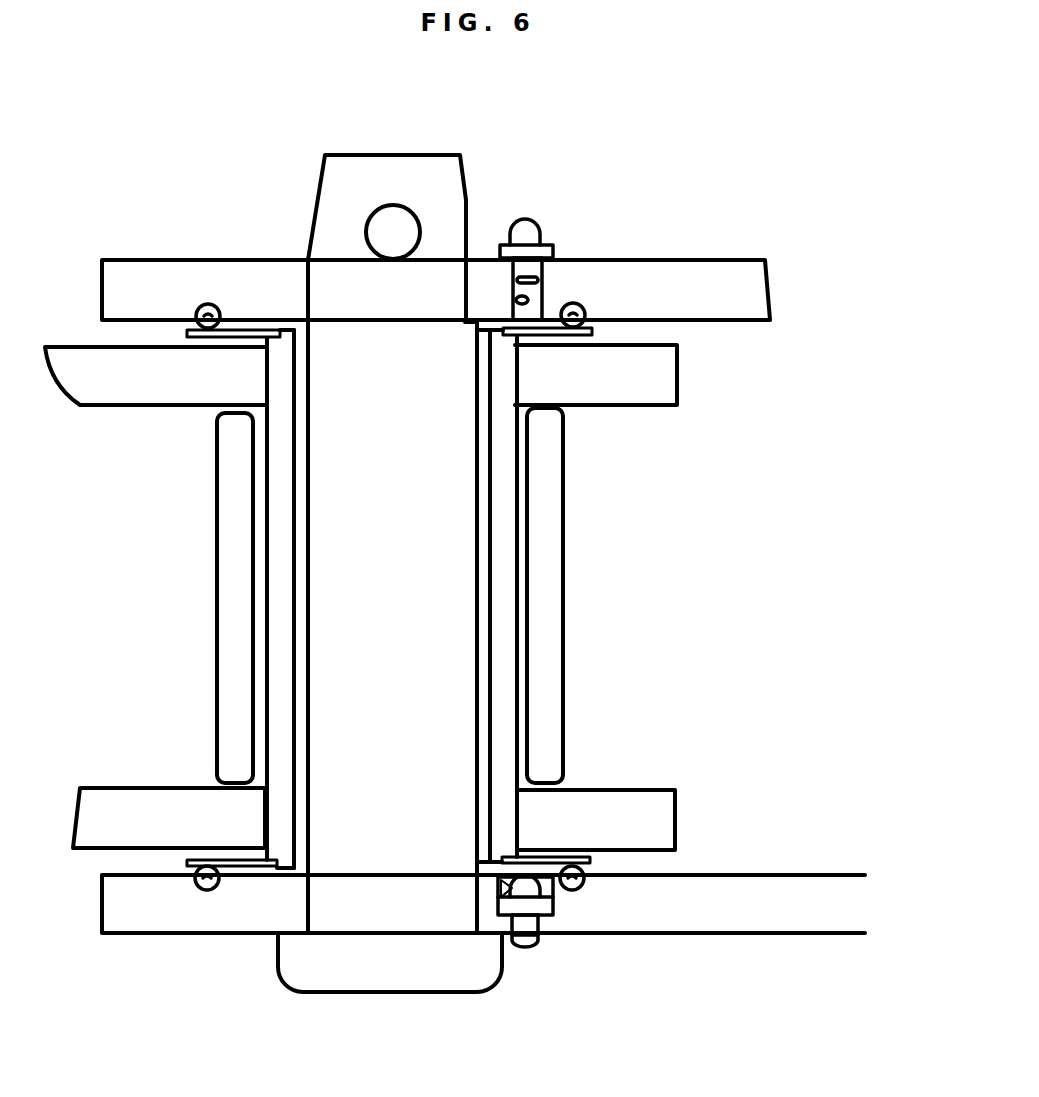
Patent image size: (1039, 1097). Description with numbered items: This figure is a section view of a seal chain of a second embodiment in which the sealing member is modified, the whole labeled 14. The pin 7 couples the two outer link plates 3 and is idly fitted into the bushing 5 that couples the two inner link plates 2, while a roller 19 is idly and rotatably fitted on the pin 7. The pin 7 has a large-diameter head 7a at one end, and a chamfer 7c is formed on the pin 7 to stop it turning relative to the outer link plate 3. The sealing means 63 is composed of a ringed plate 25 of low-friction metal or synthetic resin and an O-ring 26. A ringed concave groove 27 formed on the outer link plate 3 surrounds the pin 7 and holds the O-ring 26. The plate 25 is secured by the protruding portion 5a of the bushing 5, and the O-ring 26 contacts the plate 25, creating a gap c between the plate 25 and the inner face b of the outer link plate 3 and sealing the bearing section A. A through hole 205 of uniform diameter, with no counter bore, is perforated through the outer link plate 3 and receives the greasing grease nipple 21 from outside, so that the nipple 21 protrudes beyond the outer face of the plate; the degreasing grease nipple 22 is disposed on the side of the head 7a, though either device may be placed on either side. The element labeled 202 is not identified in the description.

The sliding mechanism 14 is at (165, 103).
The pin 7 is at (450, 574).
The chamfer 7c is at (468, 212).
The head 7a is at (390, 993).
The outer link plate 3 is at (680, 268).
The inner link plate 2 is at (632, 405).
The bushing 5 is at (334, 599).
The protruding portion 5a is at (492, 347).
The roller 19 is at (232, 558).
The ringed plate 25 is at (237, 337).
The O-ring 26 is at (208, 304).
The ringed concave groove 27 is at (577, 303).
The greasing grease nipple 21 is at (471, 244).
The degreasing grease nipple 22 is at (468, 961).
The through hole 205 is at (513, 305).
The pin engagement portion 202 is at (498, 898).
The sealing means 63 is at (178, 333).
The gap c is at (253, 333).
The inner face b is at (703, 322).
The bearing section A is at (485, 505).